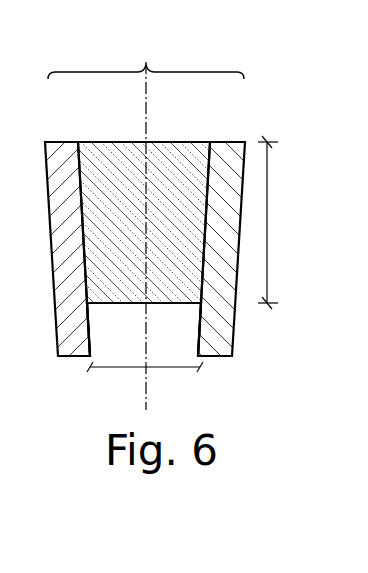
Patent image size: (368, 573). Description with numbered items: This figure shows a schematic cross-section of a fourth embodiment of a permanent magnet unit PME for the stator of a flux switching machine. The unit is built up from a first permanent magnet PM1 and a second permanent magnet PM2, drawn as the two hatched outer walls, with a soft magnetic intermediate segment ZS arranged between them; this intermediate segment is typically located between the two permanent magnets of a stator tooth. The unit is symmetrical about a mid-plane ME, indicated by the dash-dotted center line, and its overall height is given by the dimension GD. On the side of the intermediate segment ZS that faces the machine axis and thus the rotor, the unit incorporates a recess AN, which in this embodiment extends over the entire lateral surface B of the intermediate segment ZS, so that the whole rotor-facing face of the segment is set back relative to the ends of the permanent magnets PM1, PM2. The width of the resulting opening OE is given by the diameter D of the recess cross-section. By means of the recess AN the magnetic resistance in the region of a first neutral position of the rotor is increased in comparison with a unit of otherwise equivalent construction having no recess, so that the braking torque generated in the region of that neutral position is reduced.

The permanent magnet unit PME is at (145, 90).
The first permanent magnet PM1 is at (57, 150).
The second permanent magnet PM2 is at (226, 152).
The soft magnetic intermediate segment ZS is at (130, 150).
The mid-plane ME is at (146, 128).
The lateral surface B is at (112, 303).
The total depth GD is at (268, 222).
The diameter D is at (120, 367).
The recess AN is at (160, 338).
The opening OE is at (144, 329).